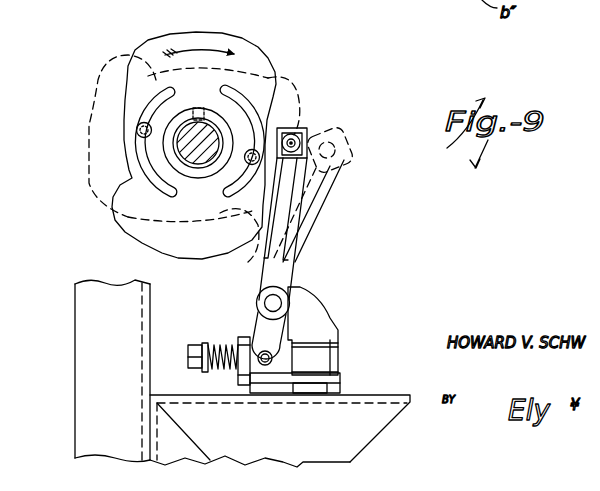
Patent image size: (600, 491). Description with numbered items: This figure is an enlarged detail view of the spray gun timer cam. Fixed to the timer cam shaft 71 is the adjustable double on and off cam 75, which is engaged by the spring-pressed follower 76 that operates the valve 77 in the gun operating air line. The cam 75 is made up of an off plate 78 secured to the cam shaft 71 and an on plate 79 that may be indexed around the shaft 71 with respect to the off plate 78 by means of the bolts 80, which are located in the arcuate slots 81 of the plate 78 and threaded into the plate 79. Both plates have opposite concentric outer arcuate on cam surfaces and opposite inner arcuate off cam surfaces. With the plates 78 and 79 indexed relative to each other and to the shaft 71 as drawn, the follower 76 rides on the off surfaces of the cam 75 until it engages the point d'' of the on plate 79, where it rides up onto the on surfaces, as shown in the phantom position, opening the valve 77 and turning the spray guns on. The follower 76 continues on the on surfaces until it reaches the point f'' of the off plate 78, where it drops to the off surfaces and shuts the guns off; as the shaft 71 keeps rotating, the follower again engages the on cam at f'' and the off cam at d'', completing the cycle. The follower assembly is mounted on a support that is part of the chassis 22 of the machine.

The chassis 22 is at (85, 348).
The timer cam shaft 71 is at (202, 155).
The adjustable double on and off cam 75 is at (141, 36).
The spring-pressed follower 76 is at (307, 137).
The valve 77 is at (315, 352).
The off plate 78 is at (208, 37).
The on plate 79 is at (273, 73).
The bolts 80 is at (137, 130).
The arcuate slots 81 is at (233, 97).